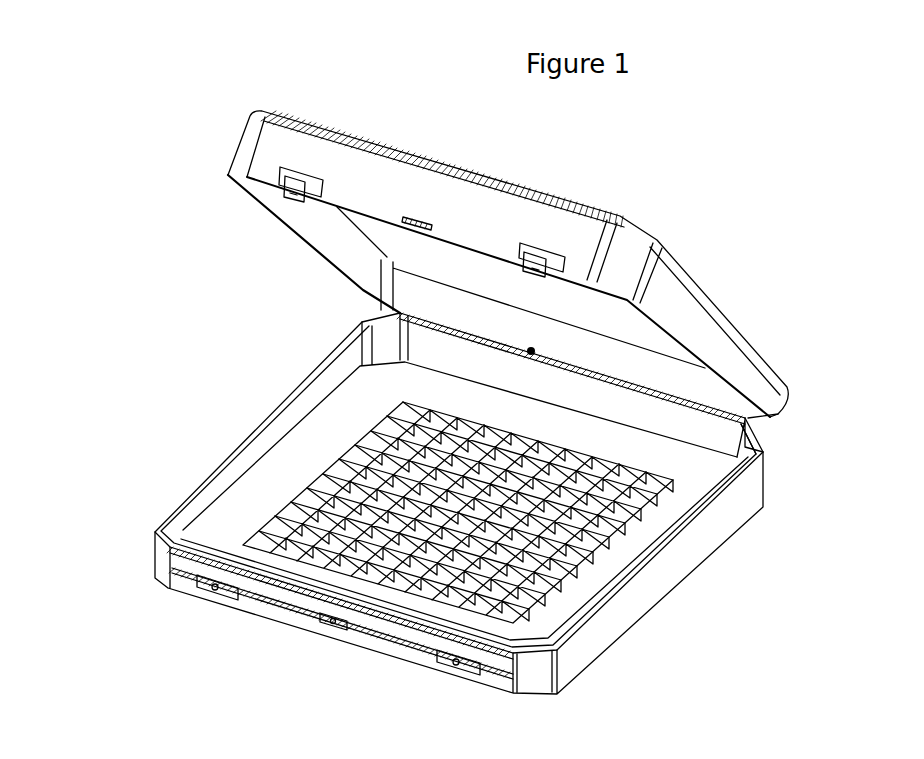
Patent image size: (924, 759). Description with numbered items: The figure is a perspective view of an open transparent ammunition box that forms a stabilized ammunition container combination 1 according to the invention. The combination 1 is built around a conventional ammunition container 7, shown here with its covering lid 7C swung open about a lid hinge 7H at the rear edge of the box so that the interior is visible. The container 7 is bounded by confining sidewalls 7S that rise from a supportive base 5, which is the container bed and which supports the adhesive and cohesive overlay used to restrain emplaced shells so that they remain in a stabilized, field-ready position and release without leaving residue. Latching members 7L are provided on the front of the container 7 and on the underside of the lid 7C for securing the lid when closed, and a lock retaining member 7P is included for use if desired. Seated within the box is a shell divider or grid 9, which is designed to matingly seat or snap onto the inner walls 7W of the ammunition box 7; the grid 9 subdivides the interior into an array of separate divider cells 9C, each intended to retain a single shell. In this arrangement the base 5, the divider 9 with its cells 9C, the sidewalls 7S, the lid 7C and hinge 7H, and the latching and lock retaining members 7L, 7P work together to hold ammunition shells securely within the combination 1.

The stabilized ammunition container combination 1 is at (806, 407).
The supportive base 5 is at (752, 523).
The ammunition container 7 is at (784, 496).
The covering lid 7C is at (707, 343).
The lid hinge 7H is at (762, 424).
The inner walls 7W is at (767, 453).
The confining sidewalls 7S is at (413, 342).
The latching members 7L is at (302, 190).
The lock retaining member 7P is at (415, 222).
The shell divider 9 is at (250, 523).
The divider cell 9C is at (625, 580).